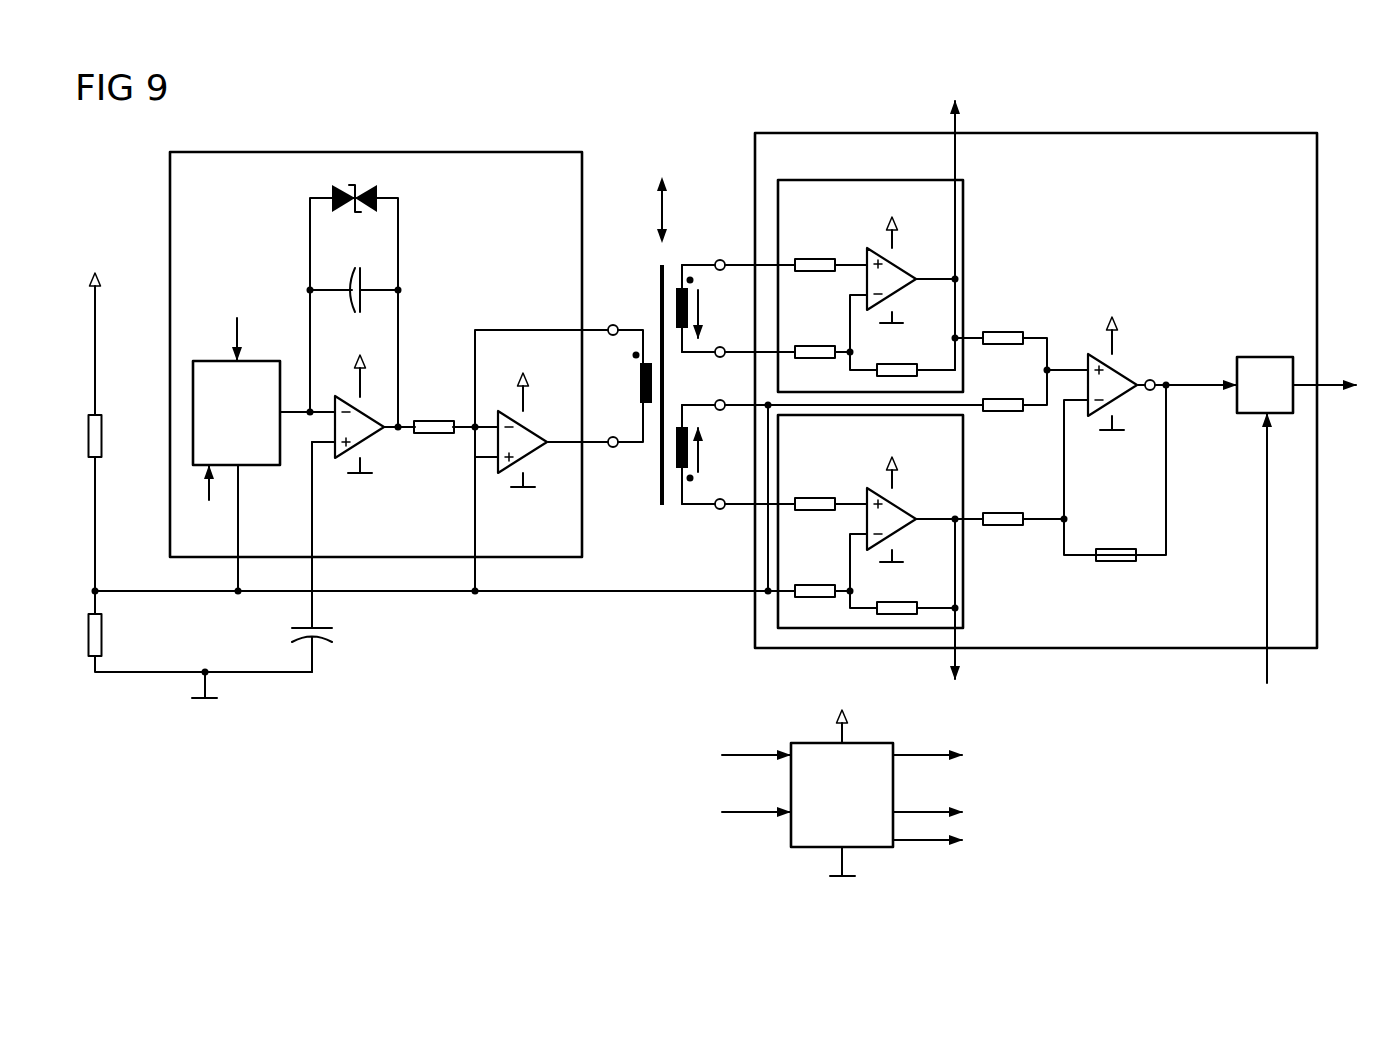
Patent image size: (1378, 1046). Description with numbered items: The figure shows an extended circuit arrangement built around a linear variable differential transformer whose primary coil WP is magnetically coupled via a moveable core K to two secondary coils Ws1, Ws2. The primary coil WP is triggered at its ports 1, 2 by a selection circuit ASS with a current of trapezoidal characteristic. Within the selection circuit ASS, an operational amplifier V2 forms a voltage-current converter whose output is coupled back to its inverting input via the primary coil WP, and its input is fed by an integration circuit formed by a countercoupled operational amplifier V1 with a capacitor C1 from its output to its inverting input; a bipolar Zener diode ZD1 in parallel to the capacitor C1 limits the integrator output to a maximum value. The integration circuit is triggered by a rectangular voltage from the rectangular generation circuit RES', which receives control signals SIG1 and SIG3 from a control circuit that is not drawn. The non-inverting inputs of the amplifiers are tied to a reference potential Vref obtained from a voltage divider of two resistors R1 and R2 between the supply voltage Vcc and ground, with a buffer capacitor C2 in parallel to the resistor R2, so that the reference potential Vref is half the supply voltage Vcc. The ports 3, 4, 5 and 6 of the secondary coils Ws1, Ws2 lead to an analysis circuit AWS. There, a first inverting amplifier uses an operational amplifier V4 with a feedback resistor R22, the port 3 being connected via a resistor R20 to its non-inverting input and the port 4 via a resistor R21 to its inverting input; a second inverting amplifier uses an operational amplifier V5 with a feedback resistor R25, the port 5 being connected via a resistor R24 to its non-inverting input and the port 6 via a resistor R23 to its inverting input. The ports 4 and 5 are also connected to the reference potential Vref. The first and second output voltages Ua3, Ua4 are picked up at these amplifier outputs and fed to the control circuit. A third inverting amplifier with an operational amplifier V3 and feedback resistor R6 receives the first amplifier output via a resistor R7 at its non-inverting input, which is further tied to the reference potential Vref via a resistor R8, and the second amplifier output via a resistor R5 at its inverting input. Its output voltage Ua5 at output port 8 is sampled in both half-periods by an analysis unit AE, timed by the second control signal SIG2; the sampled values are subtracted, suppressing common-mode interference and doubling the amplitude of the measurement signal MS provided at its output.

The selection circuit ASS is at (372, 152).
The analysis circuit AWS is at (1016, 133).
The bipolar Zener diode ZD1 is at (380, 196).
The capacitor C1 is at (359, 262).
The buffer capacitor C2 is at (336, 634).
The resistor R1 is at (103, 438).
The resistor R2 is at (103, 637).
The resistor R5 is at (1003, 531).
The resistor R6 is at (1116, 543).
The resistor R7 is at (436, 415).
The resistor R8 is at (1003, 417).
The resistor R20 is at (815, 253).
The resistor R21 is at (815, 340).
The resistor R22 is at (900, 360).
The resistor R23 is at (815, 492).
The resistor R24 is at (815, 579).
The resistor R25 is at (900, 598).
The operational amplifier V1 is at (370, 448).
The operational amplifier V2 is at (528, 420).
The operational amplifier V3 is at (1122, 418).
The operational amplifier V4 is at (903, 264).
The operational amplifier V5 is at (903, 503).
The rectangular generation circuit RES' is at (243, 448).
The primary coil WP is at (626, 378).
The secondary coil Ws1 is at (711, 308).
The secondary coil Ws2 is at (711, 454).
The core K is at (660, 480).
The analysis unit AE is at (1265, 385).
The port 1 is at (612, 317).
The port 2 is at (612, 429).
The port 3 is at (719, 254).
The port 4 is at (719, 340).
The port 5 is at (722, 420).
The port 6 is at (719, 518).
The output port 8 is at (1149, 373).
The supply voltage Vcc is at (603, 467).
The reference potential Vref is at (445, 578).
The signal 1 SIG1 is at (614, 531).
The control signal SIG2 is at (1092, 619).
The signal 3 SIG3 is at (599, 659).
The output voltage Ua3 is at (849, 412).
The output voltage Ua4 is at (849, 665).
The output voltage Ua5 is at (1187, 371).
The measurement signal MS is at (1327, 370).